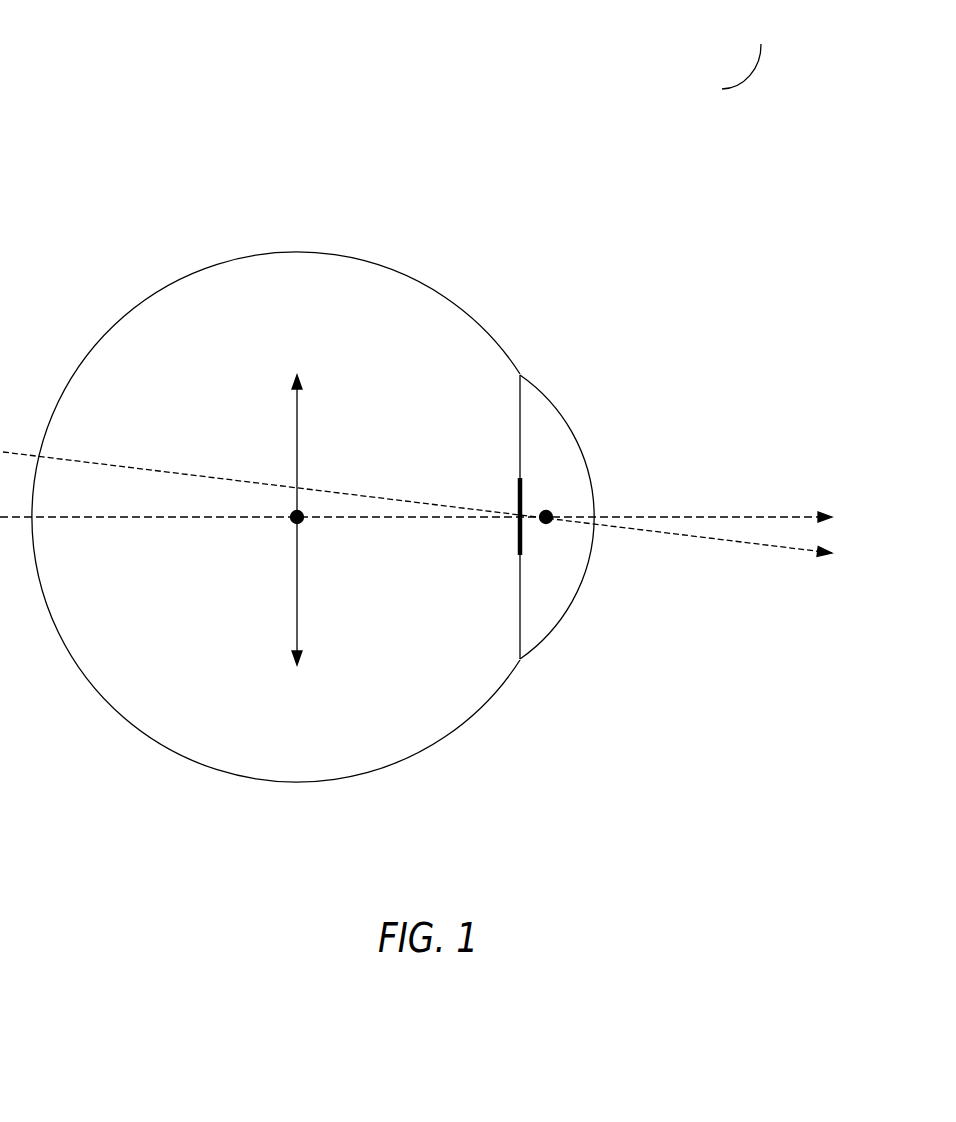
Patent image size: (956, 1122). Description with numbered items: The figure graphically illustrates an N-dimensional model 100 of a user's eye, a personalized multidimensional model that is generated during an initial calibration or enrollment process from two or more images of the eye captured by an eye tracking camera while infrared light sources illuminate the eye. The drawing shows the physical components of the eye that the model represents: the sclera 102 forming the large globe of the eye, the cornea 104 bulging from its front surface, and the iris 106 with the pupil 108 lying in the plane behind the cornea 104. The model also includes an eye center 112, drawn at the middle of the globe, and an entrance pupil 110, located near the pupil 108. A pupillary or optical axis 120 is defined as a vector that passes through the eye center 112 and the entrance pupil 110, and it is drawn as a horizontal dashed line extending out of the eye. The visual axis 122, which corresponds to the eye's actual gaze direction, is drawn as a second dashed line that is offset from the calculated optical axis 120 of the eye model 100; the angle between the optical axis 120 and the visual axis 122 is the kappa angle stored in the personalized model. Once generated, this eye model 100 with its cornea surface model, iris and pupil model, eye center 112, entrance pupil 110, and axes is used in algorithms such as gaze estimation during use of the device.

The N-dimensional model of an eye 100 is at (752, 46).
The sclera 102 is at (276, 517).
The cornea 104 is at (560, 517).
The iris 106 is at (503, 517).
The pupil 108 is at (502, 514).
The entrance pupil 110 is at (548, 504).
The eye center 112 is at (311, 520).
The pupillary or optical axis 120 is at (437, 483).
The visual axis 122 is at (443, 527).